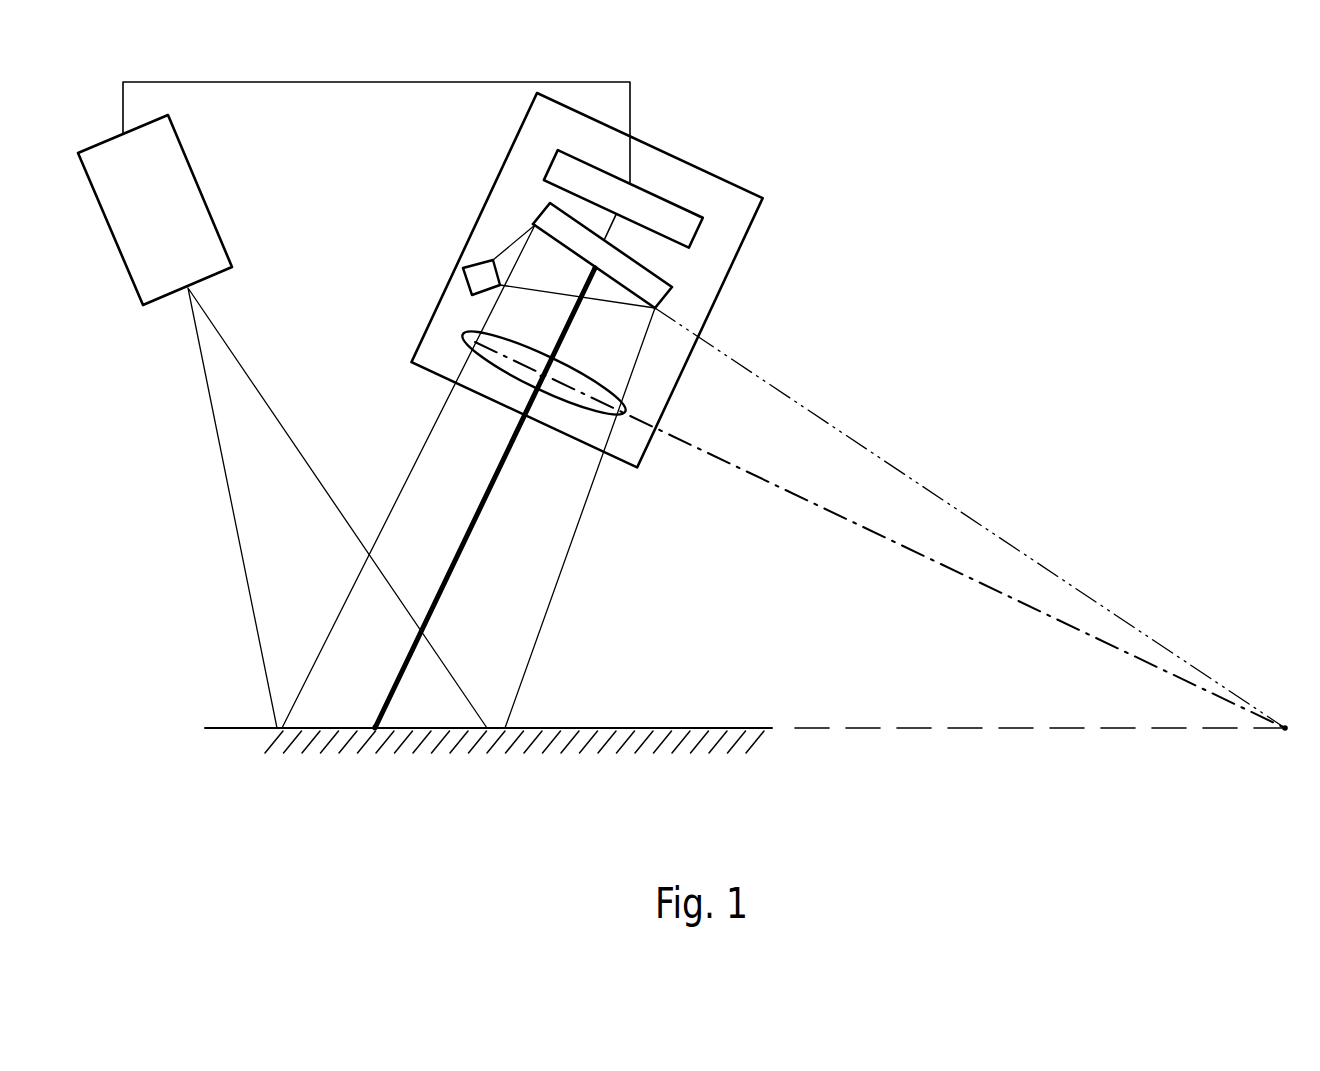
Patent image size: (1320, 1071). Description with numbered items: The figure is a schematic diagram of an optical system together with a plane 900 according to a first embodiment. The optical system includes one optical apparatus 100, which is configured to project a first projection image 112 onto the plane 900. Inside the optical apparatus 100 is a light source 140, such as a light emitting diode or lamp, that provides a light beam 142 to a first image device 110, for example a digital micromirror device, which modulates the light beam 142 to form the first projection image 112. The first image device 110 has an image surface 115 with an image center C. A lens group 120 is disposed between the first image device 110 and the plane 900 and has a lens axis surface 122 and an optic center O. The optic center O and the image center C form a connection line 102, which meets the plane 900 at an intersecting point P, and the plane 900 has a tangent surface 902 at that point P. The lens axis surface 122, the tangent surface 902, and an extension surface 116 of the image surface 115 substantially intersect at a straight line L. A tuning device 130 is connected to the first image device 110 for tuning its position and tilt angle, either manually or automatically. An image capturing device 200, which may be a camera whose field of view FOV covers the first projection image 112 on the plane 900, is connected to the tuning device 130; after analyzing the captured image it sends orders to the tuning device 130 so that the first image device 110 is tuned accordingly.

The optical apparatus 100 is at (750, 230).
The connection line 102 is at (488, 497).
The first image device 110 is at (550, 220).
The first projection image 112 is at (527, 627).
The image surface 115 is at (618, 285).
The extension surface 116 is at (1147, 635).
The lens group 120 is at (470, 352).
The lens axis surface 122 is at (970, 580).
The tuning device 130 is at (648, 203).
The light source 140 is at (470, 282).
The light beam 142 is at (508, 243).
The image capturing device 200 is at (157, 193).
The plane 900 is at (540, 730).
The tangent surface 902 is at (1120, 731).
The image center C is at (600, 268).
The optic center O is at (541, 376).
The intersecting point P is at (373, 722).
The straight line L is at (1283, 734).
The field of view FOV is at (232, 508).